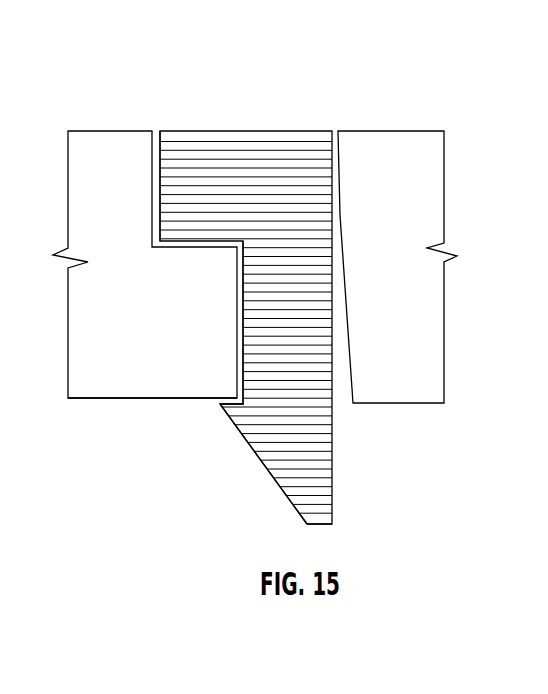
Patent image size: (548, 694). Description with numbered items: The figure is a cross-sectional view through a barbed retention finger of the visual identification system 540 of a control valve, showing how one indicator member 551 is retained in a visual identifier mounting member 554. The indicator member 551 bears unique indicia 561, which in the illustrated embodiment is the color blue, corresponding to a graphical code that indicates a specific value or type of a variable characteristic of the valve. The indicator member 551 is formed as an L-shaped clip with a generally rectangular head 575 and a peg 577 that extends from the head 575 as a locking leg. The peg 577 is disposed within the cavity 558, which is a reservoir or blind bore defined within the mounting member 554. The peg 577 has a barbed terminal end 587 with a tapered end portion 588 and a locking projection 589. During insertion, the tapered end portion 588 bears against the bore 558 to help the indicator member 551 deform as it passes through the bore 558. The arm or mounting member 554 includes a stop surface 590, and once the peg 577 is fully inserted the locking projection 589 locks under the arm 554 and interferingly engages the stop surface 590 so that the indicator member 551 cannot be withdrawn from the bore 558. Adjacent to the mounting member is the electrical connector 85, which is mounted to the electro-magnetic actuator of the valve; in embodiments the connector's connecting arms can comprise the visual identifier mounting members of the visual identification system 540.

The visual identification system 540 is at (127, 78).
The visual identifier mounting member 554 is at (88, 147).
The electrical connector 85 is at (332, 141).
The head 575 is at (193, 145).
The indicator member 551 is at (224, 155).
The indicia 561 is at (298, 165).
The cavity 558 is at (156, 195).
The locking projection 589 is at (232, 402).
The stop surface 590 is at (193, 400).
The peg 577 is at (308, 410).
The tapered end portion 588 is at (270, 468).
The barbed terminal end 587 is at (303, 490).